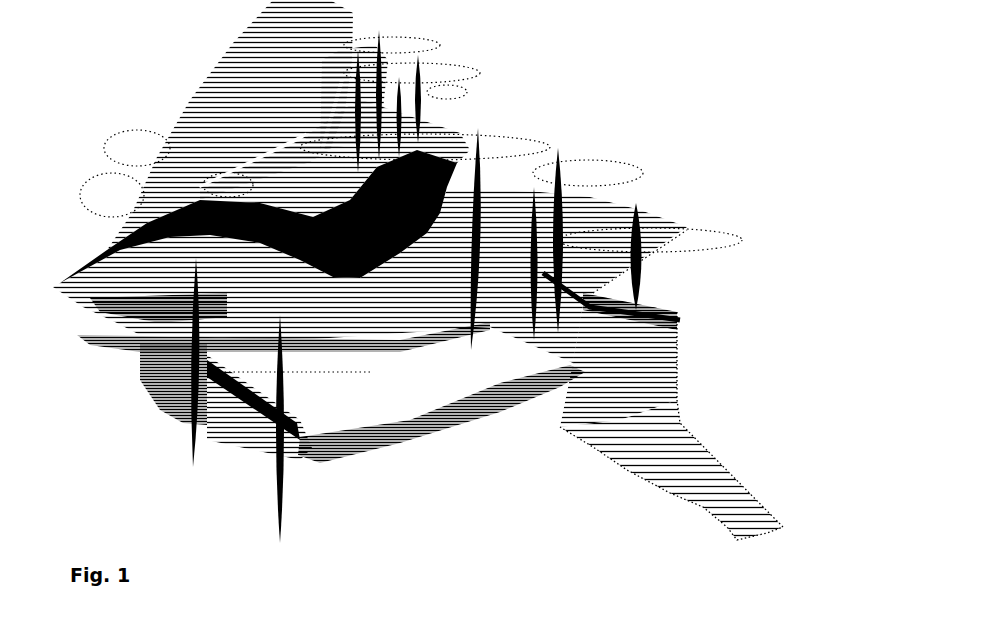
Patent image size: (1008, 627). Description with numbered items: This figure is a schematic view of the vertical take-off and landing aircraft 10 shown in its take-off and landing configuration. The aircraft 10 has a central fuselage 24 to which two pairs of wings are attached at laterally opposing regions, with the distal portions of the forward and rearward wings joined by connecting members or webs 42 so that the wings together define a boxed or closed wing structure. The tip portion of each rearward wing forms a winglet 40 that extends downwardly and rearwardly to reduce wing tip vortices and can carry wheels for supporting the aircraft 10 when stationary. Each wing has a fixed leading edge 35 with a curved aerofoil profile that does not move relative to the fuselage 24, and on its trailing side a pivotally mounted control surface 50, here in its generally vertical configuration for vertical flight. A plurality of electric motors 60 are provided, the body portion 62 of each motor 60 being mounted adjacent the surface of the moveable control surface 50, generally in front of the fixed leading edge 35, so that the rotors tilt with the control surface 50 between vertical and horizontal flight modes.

The vertical take-off and landing (VTOL) aircraft 10 is at (783, 275).
The fuselage 24 is at (408, 300).
The fixed leading edge 35 is at (213, 387).
The winglet 40 is at (707, 500).
The connecting member 42 is at (453, 433).
The control surface 50 is at (230, 453).
The electric motor 60 is at (290, 403).
The body portion 62 is at (282, 447).